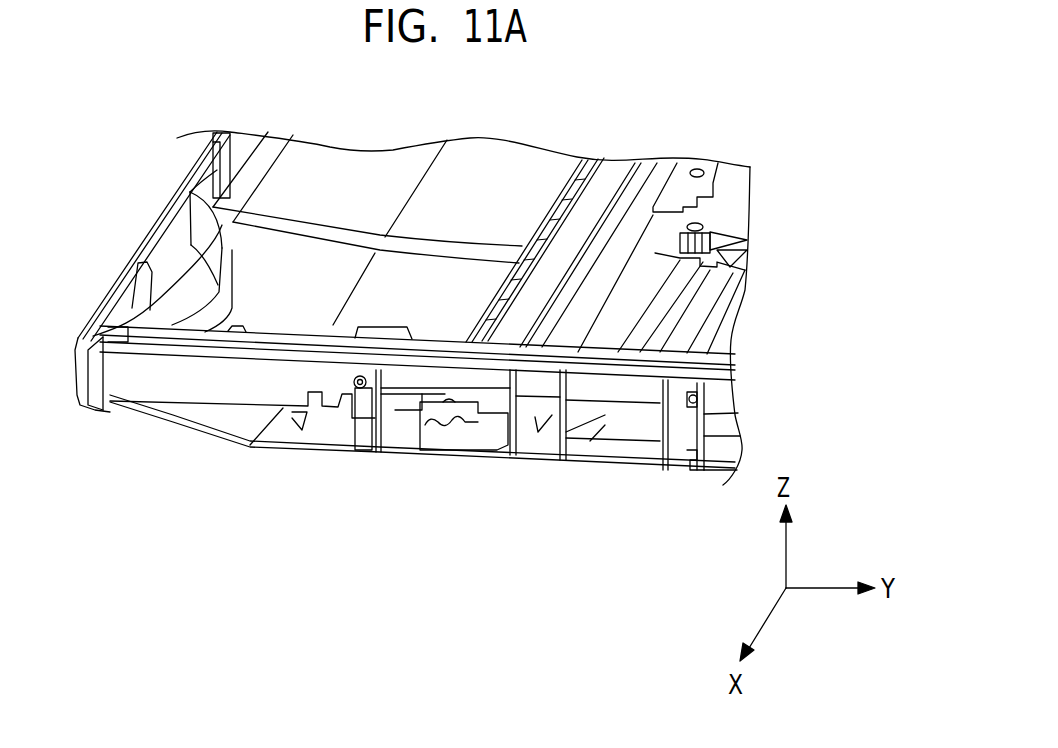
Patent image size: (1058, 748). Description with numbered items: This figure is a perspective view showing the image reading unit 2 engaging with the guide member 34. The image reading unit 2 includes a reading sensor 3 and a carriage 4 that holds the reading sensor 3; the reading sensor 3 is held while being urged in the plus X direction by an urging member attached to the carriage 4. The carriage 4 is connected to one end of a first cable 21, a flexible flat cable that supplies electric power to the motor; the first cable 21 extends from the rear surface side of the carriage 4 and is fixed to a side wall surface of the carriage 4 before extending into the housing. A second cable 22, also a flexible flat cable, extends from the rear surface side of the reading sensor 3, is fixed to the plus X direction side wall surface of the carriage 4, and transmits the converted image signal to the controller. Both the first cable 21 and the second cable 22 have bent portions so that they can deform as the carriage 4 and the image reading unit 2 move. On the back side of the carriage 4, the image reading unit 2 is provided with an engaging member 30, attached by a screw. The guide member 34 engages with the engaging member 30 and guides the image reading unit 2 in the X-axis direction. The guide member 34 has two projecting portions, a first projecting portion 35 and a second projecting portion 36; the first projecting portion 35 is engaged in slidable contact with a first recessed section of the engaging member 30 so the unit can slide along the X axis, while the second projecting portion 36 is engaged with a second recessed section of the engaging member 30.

The image reading unit 2 is at (278, 322).
The reading sensor 3 is at (213, 342).
The carriage 4 is at (605, 405).
The first cable 21 is at (640, 388).
The second cable 22 is at (193, 303).
The engaging member 30 is at (437, 420).
The guide member 34 is at (457, 458).
The first projecting portion 35 is at (593, 207).
The second projecting portion 36 is at (643, 177).